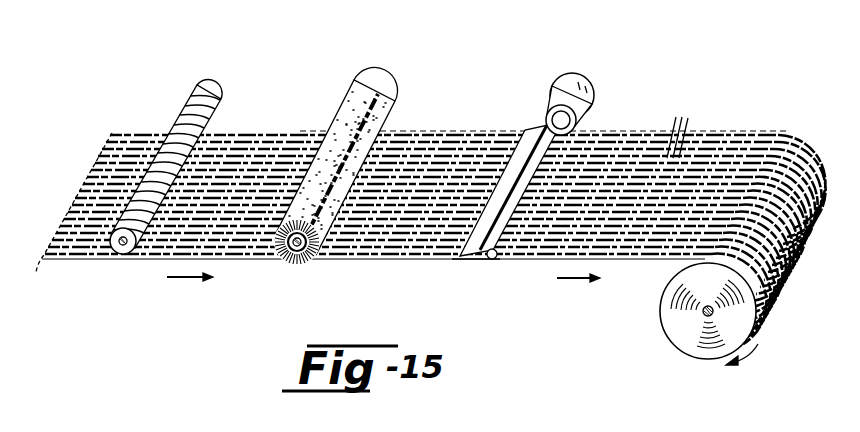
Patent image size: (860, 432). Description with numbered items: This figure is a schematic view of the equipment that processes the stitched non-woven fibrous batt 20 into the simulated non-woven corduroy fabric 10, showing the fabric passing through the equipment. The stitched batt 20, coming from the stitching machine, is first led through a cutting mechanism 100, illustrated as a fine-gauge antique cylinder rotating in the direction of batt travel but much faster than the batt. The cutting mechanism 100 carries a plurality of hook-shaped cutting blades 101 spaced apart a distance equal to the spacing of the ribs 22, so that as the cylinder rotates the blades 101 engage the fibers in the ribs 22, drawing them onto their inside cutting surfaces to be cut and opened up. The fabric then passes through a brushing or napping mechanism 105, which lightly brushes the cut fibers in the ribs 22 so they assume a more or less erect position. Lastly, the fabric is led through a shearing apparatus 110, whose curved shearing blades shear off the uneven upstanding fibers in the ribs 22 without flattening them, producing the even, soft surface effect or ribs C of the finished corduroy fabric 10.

The simulated non-woven corduroy fabric 10 is at (749, 127).
The stitched non-woven batt 20 is at (125, 128).
The ribs 22 is at (77, 258).
The cutting mechanism 100 is at (216, 90).
The hook-shaped cutting blades 101 is at (115, 255).
The brushing or napping mechanism 105 is at (397, 82).
The shearing apparatus 110 is at (589, 128).
The soft surface effect or ribs C is at (681, 127).